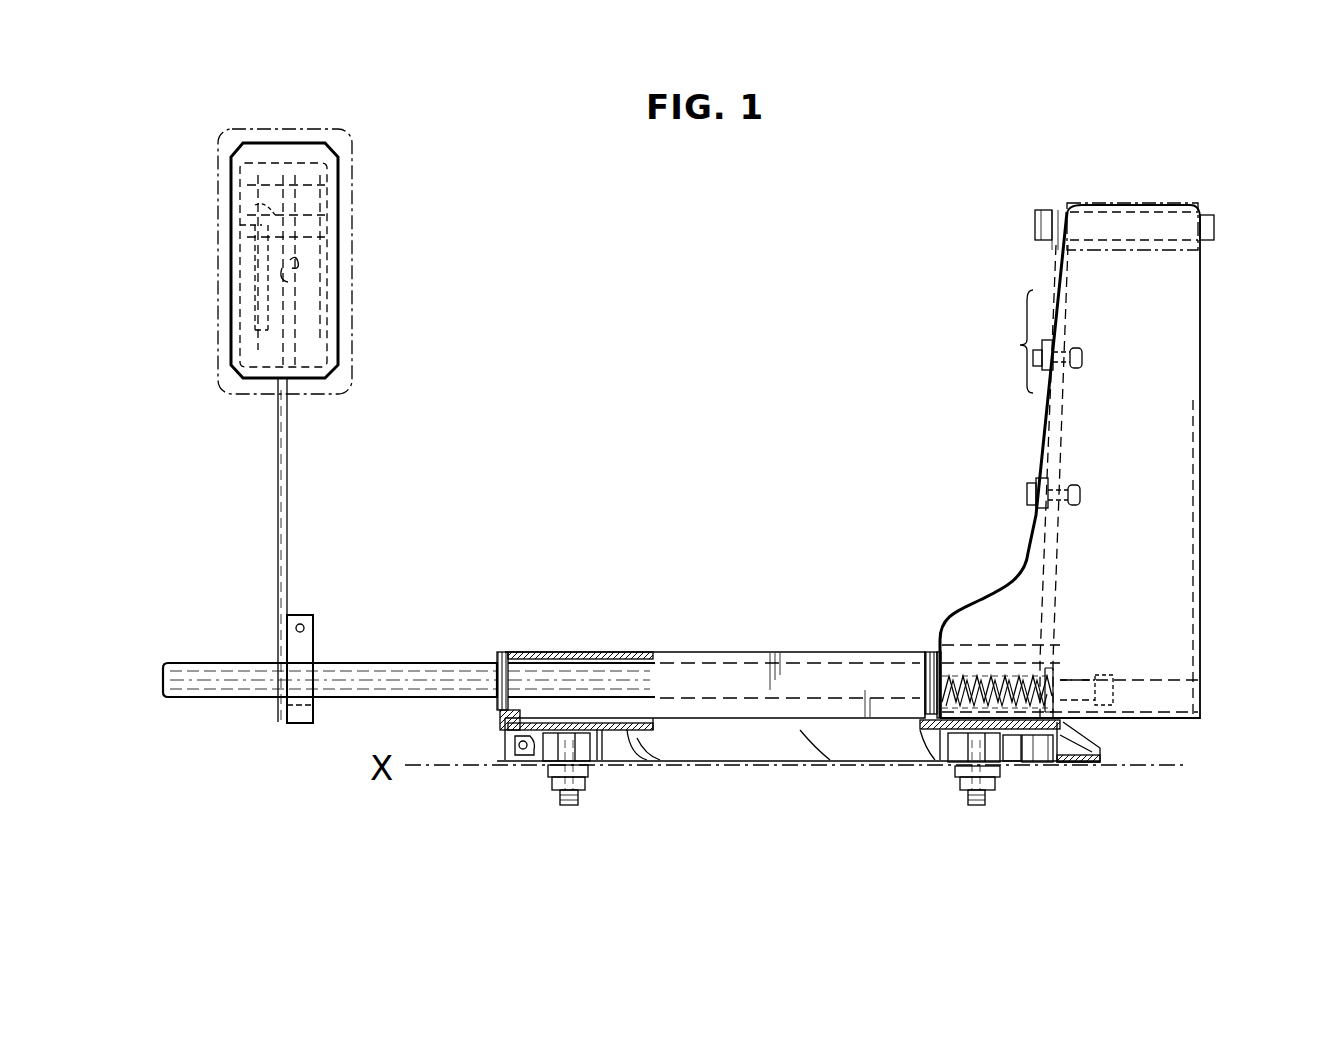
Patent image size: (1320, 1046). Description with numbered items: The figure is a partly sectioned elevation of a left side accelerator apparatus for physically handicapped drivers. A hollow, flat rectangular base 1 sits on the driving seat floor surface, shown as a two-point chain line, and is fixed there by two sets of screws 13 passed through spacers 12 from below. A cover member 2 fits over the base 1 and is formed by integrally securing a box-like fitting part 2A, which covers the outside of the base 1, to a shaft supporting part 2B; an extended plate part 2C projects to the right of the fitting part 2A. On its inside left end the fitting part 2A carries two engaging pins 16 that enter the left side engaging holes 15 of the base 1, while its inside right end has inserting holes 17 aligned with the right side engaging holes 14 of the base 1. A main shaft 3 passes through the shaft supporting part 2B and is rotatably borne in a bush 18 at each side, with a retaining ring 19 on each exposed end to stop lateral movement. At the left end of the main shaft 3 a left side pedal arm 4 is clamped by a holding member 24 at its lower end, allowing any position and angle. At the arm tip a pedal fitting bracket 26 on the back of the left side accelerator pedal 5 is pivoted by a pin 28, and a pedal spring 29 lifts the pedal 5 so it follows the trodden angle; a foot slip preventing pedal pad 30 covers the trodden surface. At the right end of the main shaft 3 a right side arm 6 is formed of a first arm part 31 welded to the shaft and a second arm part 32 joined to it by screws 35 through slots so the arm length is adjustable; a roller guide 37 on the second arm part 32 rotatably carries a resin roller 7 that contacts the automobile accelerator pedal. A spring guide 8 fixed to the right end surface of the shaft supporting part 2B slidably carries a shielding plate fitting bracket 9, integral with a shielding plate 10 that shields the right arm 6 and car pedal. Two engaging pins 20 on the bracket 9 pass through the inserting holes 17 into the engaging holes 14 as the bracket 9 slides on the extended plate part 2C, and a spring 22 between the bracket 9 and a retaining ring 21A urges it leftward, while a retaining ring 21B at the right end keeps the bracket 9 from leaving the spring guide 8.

The base 1 is at (630, 742).
The cover member 2 is at (745, 654).
The fitting part 2A is at (798, 760).
The shaft supporting part 2B is at (582, 652).
The extended plate part 2C is at (1078, 740).
The main shaft 3 is at (400, 664).
The left side pedal arm 4 is at (290, 508).
The left side accelerator pedal 5 is at (338, 300).
The right side arm 6 is at (1032, 399).
The roller 7 is at (1190, 205).
The spring guide 8 is at (1115, 690).
The shielding plate fitting bracket 9 is at (1062, 662).
The shielding plate 10 is at (1200, 375).
The spacers 12 is at (600, 762).
The screws 13 is at (565, 805).
The right side engaging holes 14 is at (1010, 765).
The left side engaging holes 15 is at (520, 760).
The engaging pins 16 is at (535, 748).
The inserting holes 17 is at (1100, 740).
The bush 18 is at (530, 652).
The retaining ring 19 is at (500, 655).
The engaging pins 20 is at (1045, 765).
The retaining ring 21A is at (1035, 650).
The retaining ring 21B is at (1100, 675).
The spring 22 is at (975, 645).
The holding member 24 is at (298, 725).
The pedal fitting bracket 26 is at (247, 185).
The pin 28 is at (240, 225).
The pedal spring 29 is at (270, 215).
The foot slip preventing pedal pad 30 is at (353, 152).
The first arm part 31 is at (1060, 575).
The second arm part 32 is at (1045, 248).
The screws 35 is at (1084, 357).
The roller guide 37 is at (1215, 228).